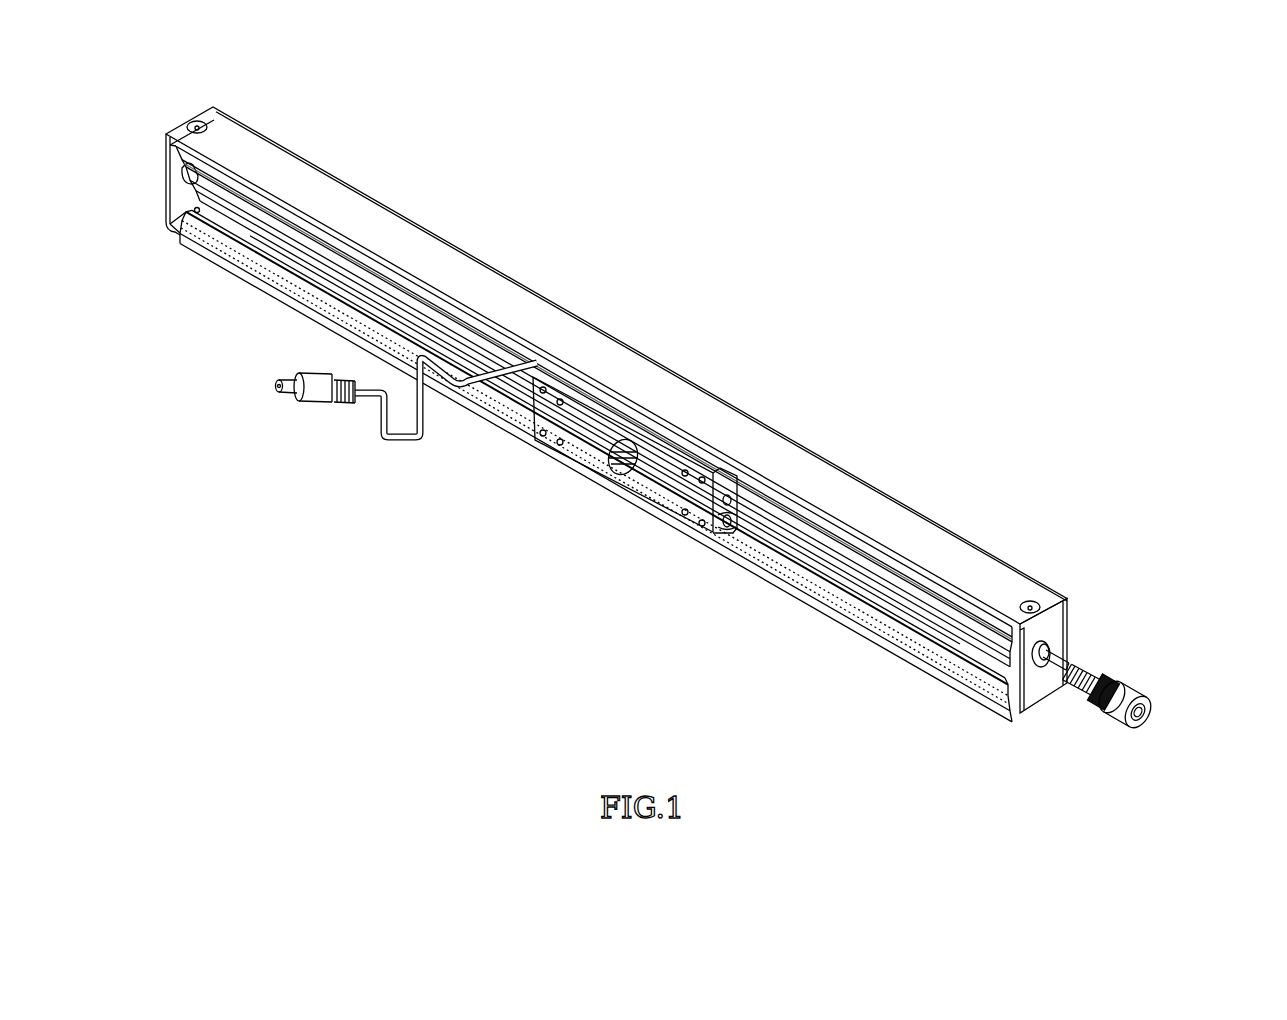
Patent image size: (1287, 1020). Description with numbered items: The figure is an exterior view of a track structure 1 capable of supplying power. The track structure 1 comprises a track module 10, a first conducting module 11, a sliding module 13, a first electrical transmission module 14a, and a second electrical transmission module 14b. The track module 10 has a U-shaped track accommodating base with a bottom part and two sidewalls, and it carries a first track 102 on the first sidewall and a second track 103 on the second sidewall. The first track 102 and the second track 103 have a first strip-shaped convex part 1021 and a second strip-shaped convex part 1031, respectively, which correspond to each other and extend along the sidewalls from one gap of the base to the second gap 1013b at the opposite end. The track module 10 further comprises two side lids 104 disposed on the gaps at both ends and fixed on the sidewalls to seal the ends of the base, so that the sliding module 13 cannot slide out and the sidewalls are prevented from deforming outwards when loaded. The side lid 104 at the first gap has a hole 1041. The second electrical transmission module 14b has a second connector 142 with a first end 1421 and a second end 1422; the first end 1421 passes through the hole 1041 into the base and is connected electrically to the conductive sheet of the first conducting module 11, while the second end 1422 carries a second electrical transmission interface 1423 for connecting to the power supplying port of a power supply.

The track structure 1 is at (1232, 76).
The track module 10 is at (723, 563).
The first conducting module 11 is at (947, 638).
The sliding module 13 is at (563, 468).
The first electrical transmission module 14a is at (352, 425).
The second electrical transmission module 14b is at (1077, 708).
The first track 102 is at (293, 308).
The first strip-shaped convex part 1021 is at (242, 253).
The second track 103 is at (957, 603).
The second strip-shaped convex part 1031 is at (1003, 620).
The side lid 104 is at (163, 183).
The hole 1041 is at (1053, 652).
The second gap 1013b is at (177, 200).
The second connector 142 is at (1102, 684).
The first end 1421 is at (1020, 712).
The second end 1422 is at (1140, 697).
The second electrical transmission interface 1423 is at (1147, 725).